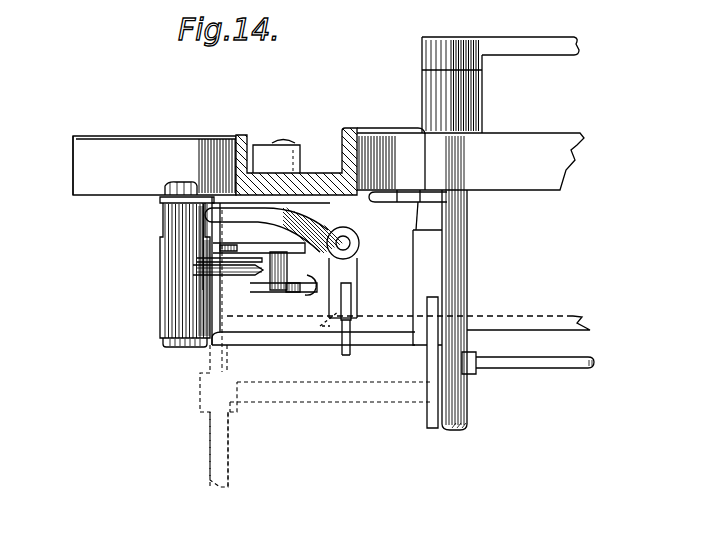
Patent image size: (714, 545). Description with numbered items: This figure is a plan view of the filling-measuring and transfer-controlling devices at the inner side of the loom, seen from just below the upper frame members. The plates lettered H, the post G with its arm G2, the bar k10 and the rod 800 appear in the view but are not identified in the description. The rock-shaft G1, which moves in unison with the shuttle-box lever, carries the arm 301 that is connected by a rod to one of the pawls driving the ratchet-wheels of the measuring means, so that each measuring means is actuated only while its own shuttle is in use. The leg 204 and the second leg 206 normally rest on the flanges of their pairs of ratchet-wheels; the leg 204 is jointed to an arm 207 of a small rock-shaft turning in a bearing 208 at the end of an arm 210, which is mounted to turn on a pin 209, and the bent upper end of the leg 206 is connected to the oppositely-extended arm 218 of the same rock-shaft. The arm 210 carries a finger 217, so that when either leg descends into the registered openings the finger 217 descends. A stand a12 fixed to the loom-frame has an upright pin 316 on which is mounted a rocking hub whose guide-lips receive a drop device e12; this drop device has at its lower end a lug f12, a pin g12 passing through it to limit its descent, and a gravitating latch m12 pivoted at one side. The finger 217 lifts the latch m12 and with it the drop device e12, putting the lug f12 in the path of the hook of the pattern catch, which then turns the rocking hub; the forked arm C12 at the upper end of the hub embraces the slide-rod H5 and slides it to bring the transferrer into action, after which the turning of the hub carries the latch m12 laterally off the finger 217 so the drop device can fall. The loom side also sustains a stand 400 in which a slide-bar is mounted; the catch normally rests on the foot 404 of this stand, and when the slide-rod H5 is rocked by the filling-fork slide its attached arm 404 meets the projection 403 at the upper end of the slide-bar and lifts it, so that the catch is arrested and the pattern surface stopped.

The frame plate H is at (113, 146).
The post G is at (422, 125).
The arm of post G2 is at (536, 45).
The rock-shaft G1 is at (458, 256).
The slide-rod H5 is at (228, 457).
The bar k10 is at (509, 323).
The rod 800 is at (507, 367).
The projection 403 is at (428, 413).
The foot of the stand 404 is at (323, 400).
The stand 400 is at (424, 271).
The arm of rock-shaft 301 is at (410, 220).
The upright pin 316 is at (351, 242).
The forked arm C12 is at (323, 235).
The stand a12 is at (353, 267).
The drop device e12 is at (352, 288).
The pin g12 is at (355, 298).
The lug f12 is at (343, 349).
The gravitating latch m12 is at (315, 335).
The leg 204 is at (301, 281).
The second leg 206 is at (270, 236).
The arm 207 is at (275, 288).
The bearing 208 is at (257, 276).
The pin 209 is at (175, 343).
The arm 210 is at (228, 268).
The finger 217 is at (267, 323).
The oppositely-extended arm 218 is at (220, 260).